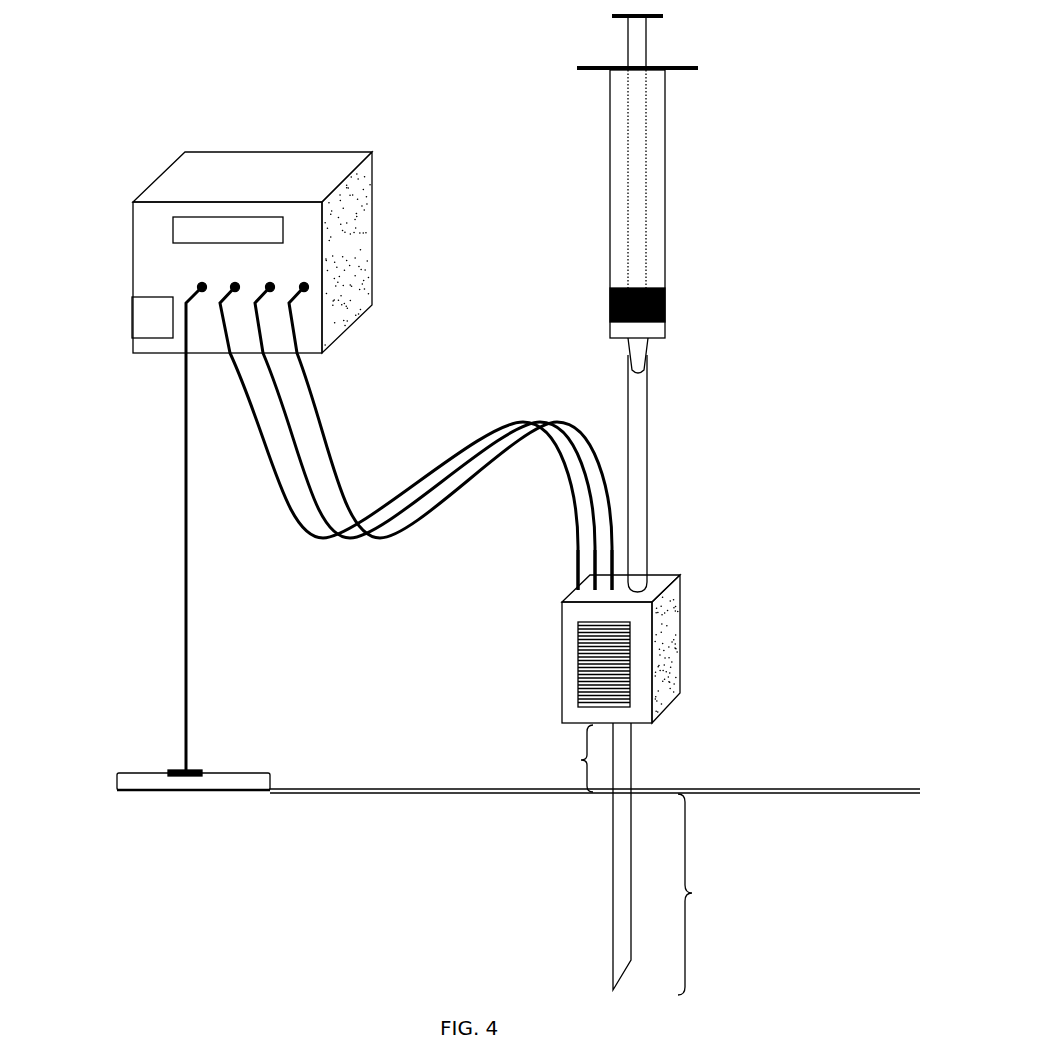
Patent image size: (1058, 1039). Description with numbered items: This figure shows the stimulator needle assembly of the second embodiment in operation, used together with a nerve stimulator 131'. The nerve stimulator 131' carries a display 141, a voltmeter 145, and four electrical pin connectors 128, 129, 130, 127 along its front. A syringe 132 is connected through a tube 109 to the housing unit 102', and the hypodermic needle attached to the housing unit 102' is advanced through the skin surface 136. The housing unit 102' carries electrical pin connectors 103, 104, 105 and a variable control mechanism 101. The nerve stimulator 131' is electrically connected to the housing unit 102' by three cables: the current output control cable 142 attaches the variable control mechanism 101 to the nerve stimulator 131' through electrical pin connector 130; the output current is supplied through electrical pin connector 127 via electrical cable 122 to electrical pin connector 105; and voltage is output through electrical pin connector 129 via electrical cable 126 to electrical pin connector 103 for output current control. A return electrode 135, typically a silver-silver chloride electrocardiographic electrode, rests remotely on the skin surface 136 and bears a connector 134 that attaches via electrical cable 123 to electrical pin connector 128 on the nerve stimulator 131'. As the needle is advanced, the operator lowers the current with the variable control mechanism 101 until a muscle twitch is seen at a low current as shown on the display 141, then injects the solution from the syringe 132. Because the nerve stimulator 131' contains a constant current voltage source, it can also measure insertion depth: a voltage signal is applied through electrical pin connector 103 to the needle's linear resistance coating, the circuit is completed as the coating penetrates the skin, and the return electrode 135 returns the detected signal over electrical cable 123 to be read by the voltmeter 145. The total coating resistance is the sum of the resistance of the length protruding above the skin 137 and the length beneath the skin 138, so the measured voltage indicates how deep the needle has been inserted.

The nerve stimulator 131' is at (252, 197).
The display 141 is at (183, 213).
The voltmeter 145 is at (132, 322).
The electrical pin connector 128 is at (199, 287).
The electrical pin connector 129 is at (233, 286).
The electrical pin connector 130 is at (272, 286).
The electrical pin connector 127 is at (306, 288).
The electrical cable 123 is at (186, 708).
The current output control cable 142 is at (290, 438).
The electrical cable 122 is at (307, 388).
The electrical cable 126 is at (323, 540).
The electrical pin connector 103 is at (578, 578).
The electrical pin connector 104 is at (594, 556).
The electrical pin connector 105 is at (612, 557).
The syringe 132 is at (665, 196).
The tube 109 is at (648, 398).
The housing unit 102' is at (682, 649).
The variable control mechanism 101 is at (578, 683).
The length protruding above the skin 137 is at (581, 760).
The length beneath the skin 138 is at (692, 893).
The skin surface 136 is at (425, 790).
The return electrode 135 is at (235, 790).
The connector 134 is at (182, 776).